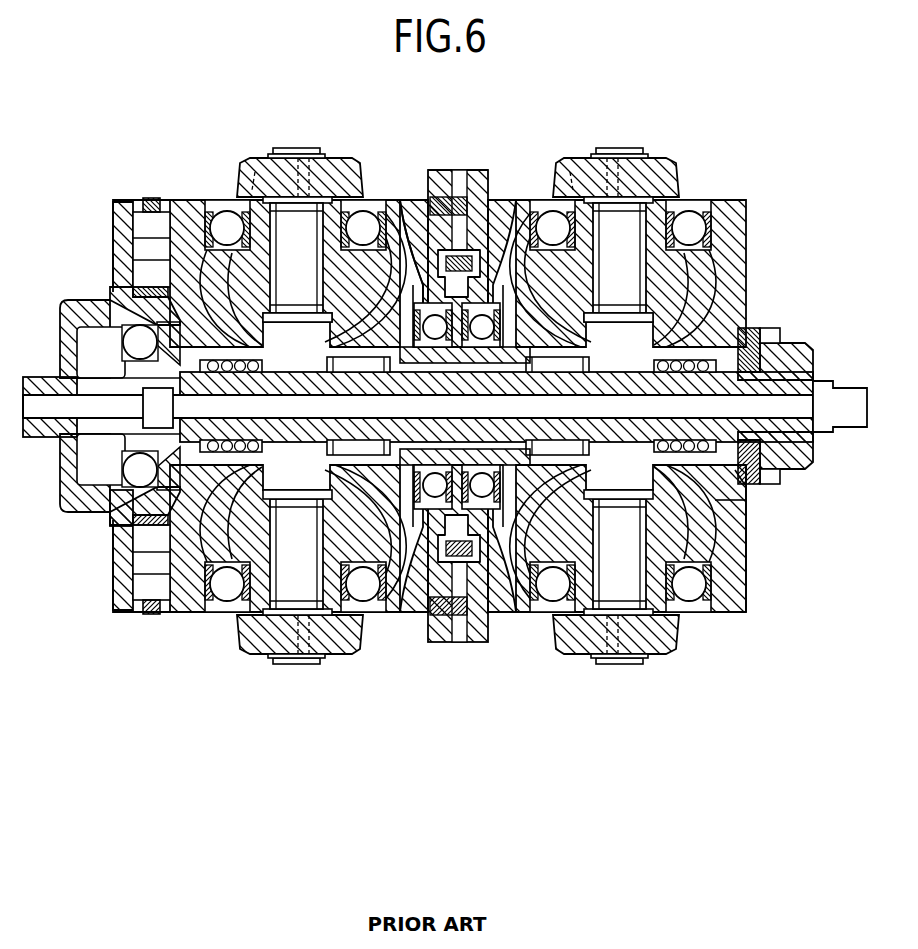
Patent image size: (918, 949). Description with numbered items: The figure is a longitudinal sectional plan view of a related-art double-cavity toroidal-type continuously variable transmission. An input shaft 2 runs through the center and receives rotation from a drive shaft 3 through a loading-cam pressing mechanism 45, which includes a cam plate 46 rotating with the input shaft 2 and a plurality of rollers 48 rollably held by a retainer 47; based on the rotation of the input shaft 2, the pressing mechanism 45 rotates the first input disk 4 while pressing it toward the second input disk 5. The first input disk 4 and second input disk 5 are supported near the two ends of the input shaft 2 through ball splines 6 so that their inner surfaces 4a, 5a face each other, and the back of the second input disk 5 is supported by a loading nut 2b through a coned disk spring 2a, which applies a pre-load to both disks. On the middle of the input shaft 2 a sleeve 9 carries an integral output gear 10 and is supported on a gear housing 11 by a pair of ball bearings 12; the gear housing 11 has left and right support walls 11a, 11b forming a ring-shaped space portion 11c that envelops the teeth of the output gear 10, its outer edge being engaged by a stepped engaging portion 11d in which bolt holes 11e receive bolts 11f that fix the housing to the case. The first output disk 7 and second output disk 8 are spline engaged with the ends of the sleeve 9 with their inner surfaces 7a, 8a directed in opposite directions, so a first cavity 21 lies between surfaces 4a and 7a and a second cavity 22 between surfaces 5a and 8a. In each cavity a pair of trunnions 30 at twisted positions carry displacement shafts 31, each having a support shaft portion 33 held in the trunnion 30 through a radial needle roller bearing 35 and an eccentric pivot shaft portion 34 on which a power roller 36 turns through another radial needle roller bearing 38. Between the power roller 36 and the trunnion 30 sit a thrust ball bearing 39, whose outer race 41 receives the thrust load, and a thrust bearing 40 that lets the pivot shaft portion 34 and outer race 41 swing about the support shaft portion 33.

The input shaft 2 is at (590, 362).
The coned disk spring 2a is at (778, 345).
The loading nut 2b is at (805, 449).
The drive shaft 3 is at (43, 437).
The first input disk 4 is at (112, 524).
The inner surface of first input disk 4a is at (135, 292).
The second input disk 5 is at (742, 540).
The inner surface of second input disk 5a is at (723, 512).
The ball spline 6 is at (660, 362).
The first output disk 7 is at (397, 215).
The inner surface of first output disk 7a is at (398, 595).
The second output disk 8 is at (503, 585).
The inner surface of second output disk 8a is at (520, 205).
The sleeve 9 is at (498, 330).
The output gear 10 is at (415, 212).
The gear housing 11 is at (480, 190).
The left support wall 11a is at (380, 335).
The right support wall 11b is at (588, 297).
The ring-shaped space portion 11c is at (482, 252).
The stepped engaging portion 11d is at (458, 170).
The bolt hole 11e is at (443, 197).
The bolt 11f is at (488, 175).
The ball bearing 12 is at (330, 362).
The first cavity 21 is at (152, 612).
The second cavity 22 is at (730, 492).
The trunnion 30 is at (340, 175).
The displacement shaft 31 is at (280, 205).
The support shaft portion 33 is at (300, 150).
The pivot shaft portion 34 is at (320, 154).
The radial needle roller bearing 35 is at (255, 172).
The power roller 36 is at (135, 250).
The radial needle roller bearing 38 is at (310, 280).
The thrust ball bearing 39 is at (210, 205).
The thrust bearing 40 is at (258, 205).
The outer race 41 is at (200, 213).
The pressing mechanism 45 is at (113, 227).
The cam plate 46 is at (118, 203).
The retainer 47 is at (150, 205).
The roller 48 is at (148, 208).